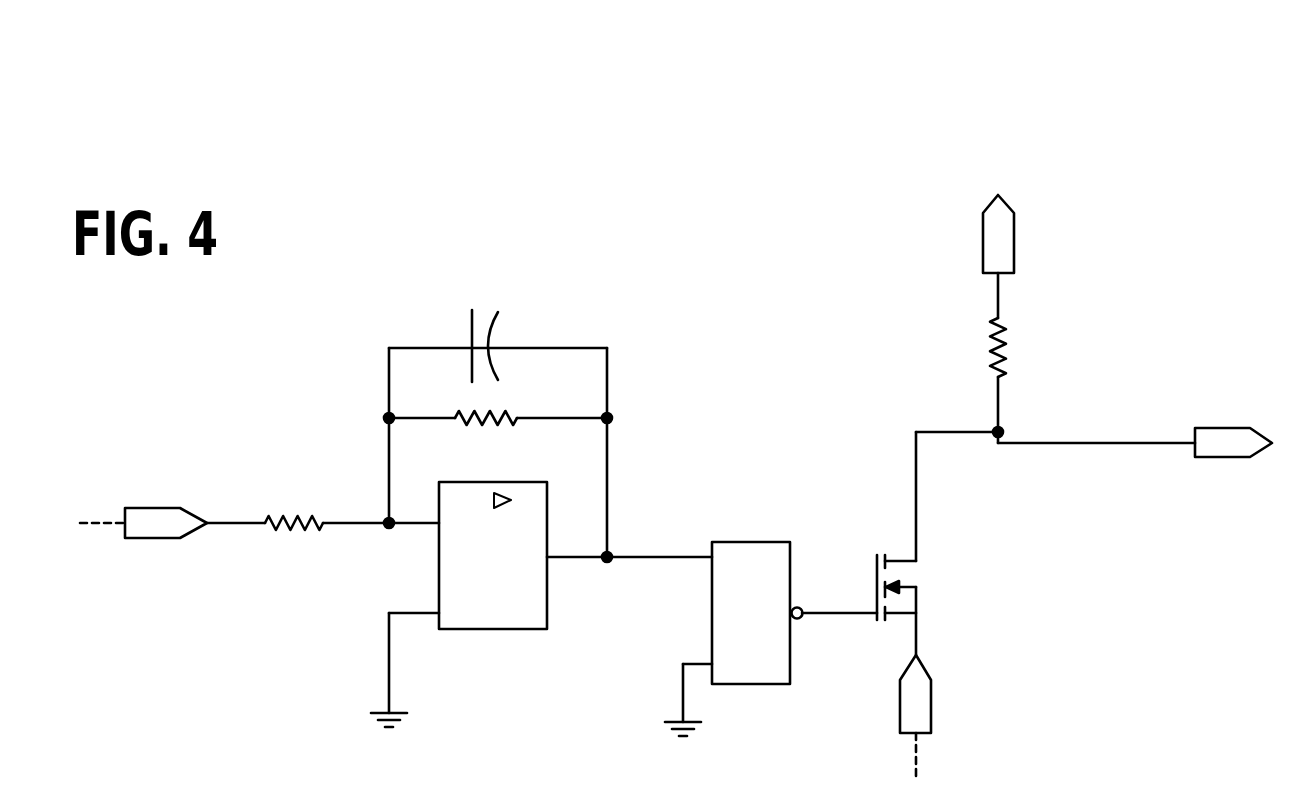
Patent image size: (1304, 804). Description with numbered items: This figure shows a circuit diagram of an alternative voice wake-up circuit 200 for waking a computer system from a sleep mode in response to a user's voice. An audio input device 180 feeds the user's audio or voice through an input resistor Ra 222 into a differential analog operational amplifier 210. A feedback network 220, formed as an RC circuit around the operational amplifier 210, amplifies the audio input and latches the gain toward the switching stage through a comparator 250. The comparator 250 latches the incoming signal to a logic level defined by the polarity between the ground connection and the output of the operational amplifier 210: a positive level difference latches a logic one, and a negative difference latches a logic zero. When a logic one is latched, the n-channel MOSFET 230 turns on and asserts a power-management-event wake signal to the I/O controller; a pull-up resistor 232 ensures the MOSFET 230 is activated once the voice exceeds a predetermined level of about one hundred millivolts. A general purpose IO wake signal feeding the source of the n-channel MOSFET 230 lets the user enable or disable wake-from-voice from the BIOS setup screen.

The audio input device 180 is at (140, 508).
The voice wake-up circuit 200 is at (1102, 193).
The operational amplifier 210 is at (548, 597).
The feedback network 220 is at (613, 330).
The input resistor Ra 222 is at (290, 517).
The n-channel MOSFET 230 is at (905, 606).
The pull-up resistor 232 is at (1003, 317).
The comparator 250 is at (743, 540).